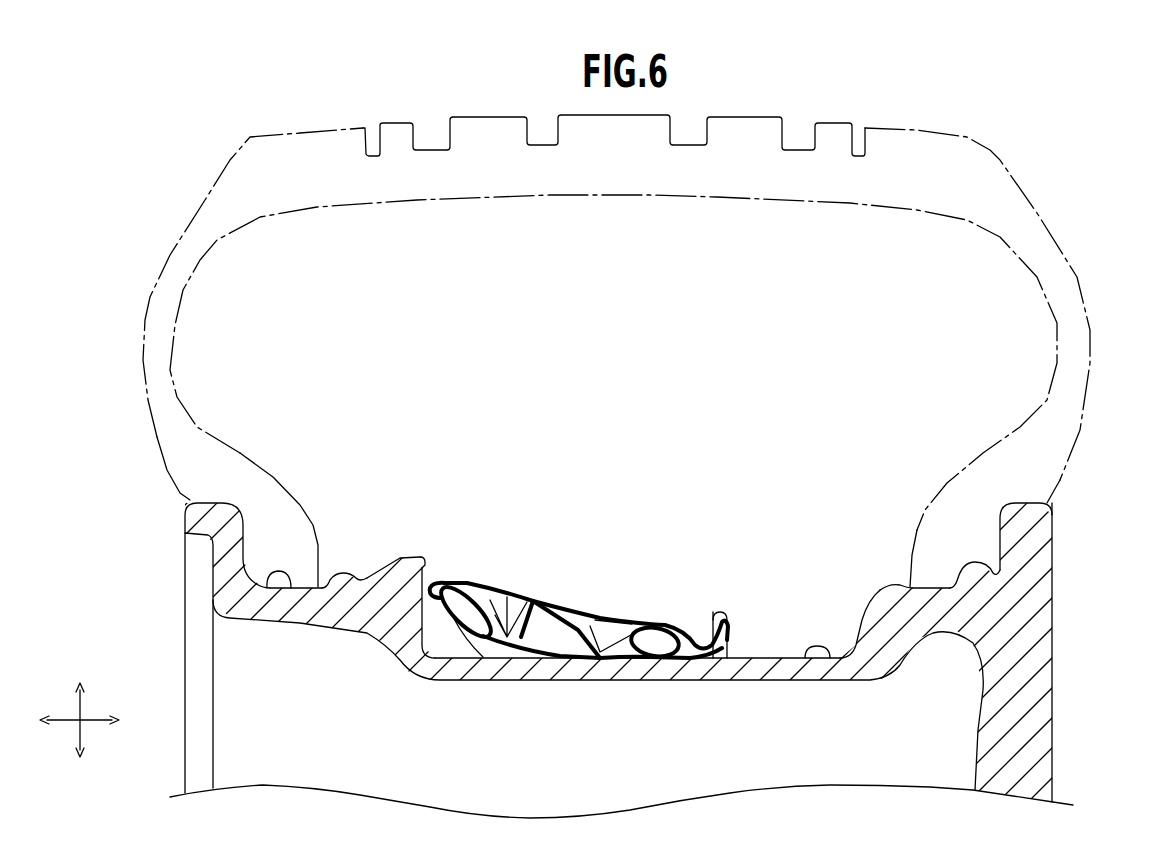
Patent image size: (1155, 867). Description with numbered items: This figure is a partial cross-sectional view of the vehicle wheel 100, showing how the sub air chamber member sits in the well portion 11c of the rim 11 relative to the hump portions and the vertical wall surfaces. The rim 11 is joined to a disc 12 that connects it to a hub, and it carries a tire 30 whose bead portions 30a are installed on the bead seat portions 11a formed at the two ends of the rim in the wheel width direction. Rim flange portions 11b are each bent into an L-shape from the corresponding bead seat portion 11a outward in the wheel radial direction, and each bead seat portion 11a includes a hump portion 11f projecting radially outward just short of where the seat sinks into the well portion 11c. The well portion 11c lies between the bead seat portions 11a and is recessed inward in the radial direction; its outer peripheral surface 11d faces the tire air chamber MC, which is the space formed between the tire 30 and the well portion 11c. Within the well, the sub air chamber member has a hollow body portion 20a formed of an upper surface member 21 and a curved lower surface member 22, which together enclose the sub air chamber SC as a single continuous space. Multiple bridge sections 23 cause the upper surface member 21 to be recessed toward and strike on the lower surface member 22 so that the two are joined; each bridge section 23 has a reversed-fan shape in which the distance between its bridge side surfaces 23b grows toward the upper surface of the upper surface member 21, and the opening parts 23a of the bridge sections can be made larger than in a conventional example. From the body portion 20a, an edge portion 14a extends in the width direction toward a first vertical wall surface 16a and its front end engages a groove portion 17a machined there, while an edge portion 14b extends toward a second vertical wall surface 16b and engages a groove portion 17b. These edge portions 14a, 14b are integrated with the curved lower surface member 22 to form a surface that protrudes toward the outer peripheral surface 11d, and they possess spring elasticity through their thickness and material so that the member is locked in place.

The vehicle wheel 100 is at (696, 432).
The tire 30 is at (1059, 243).
The bead portions 30a is at (316, 530).
The rim 11 is at (577, 433).
The well portion 11c is at (762, 556).
The bead seat portions 11a is at (268, 590).
The rim flange portions 11b is at (190, 520).
The outer peripheral surface of the well portion 11d is at (832, 665).
The hump portion 11f is at (340, 590).
The disc 12 is at (1037, 755).
The edge portion 14a is at (700, 602).
The edge portion 14b is at (433, 573).
The first vertical wall surface 16a is at (720, 640).
The second vertical wall surface 16b is at (395, 637).
The groove portion 17a is at (710, 608).
The groove portion 17b is at (425, 562).
The body portion 20a is at (520, 590).
The upper surface member 21 is at (465, 587).
The lower surface member 22 is at (475, 633).
The bridge sections 23 is at (485, 583).
The opening parts 23a is at (543, 590).
The bridge side surfaces 23b is at (527, 613).
The sub air chamber SC is at (574, 647).
The tire air chamber MC is at (647, 317).